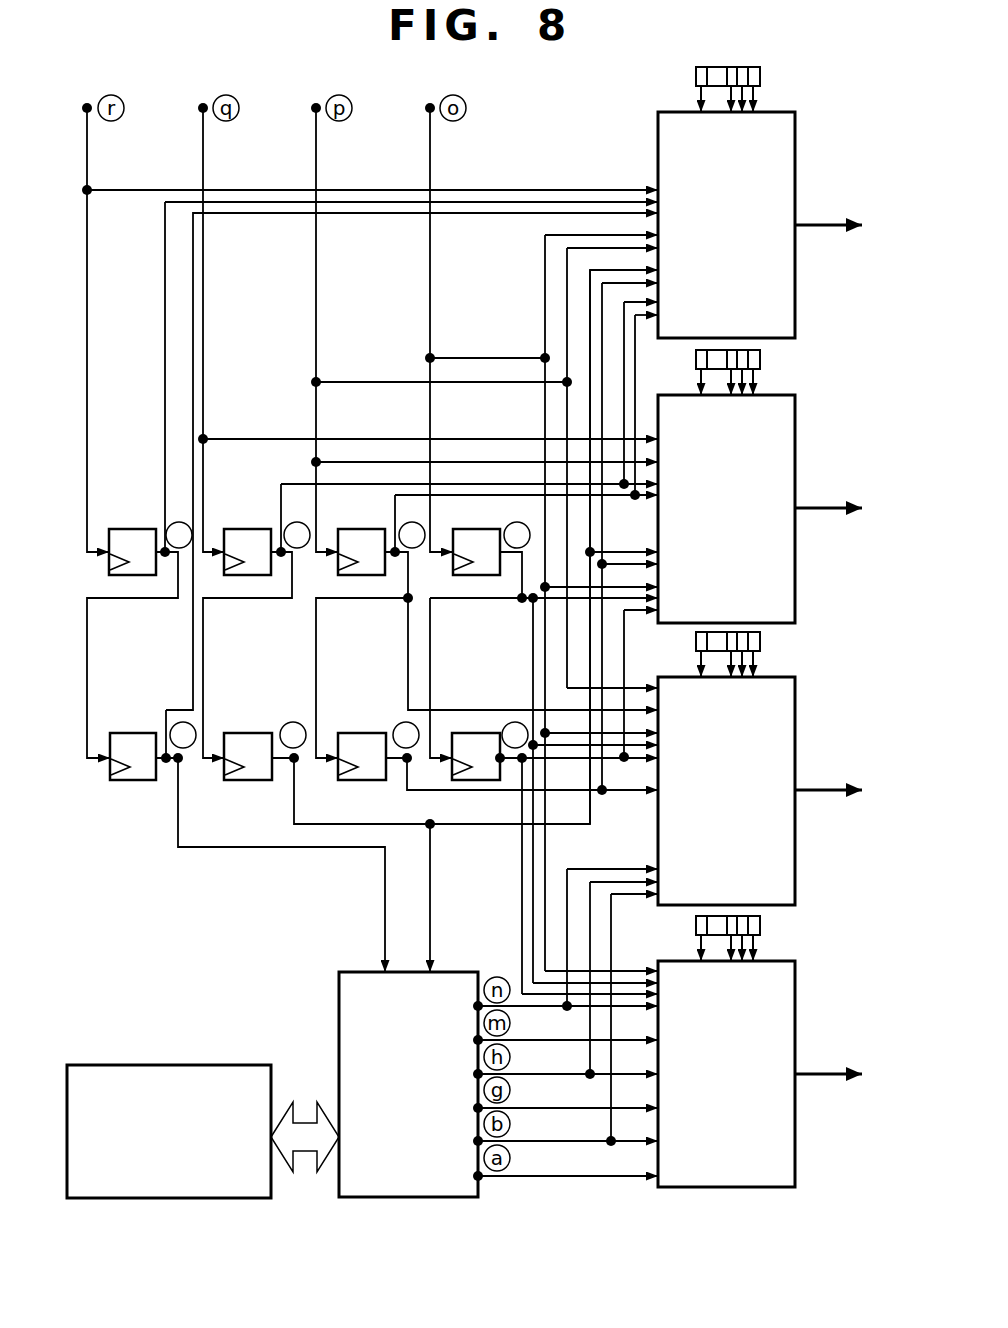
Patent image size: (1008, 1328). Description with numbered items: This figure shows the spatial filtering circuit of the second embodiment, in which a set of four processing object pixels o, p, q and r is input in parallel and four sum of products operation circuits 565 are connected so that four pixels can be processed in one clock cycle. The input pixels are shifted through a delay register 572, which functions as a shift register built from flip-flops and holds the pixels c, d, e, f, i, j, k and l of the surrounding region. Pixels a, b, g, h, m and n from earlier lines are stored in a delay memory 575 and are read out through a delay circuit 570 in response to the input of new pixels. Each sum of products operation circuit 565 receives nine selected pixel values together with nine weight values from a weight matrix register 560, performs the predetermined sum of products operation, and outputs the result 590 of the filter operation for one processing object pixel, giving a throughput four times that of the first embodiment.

The weight matrix register 560 is at (786, 926).
The sum of products operation circuit 565 is at (817, 999).
The result of the filter operation 590 is at (829, 1109).
The delay circuit 570 is at (408, 1198).
The delay memory 575 is at (236, 1198).
The delay register 572 is at (170, 876).